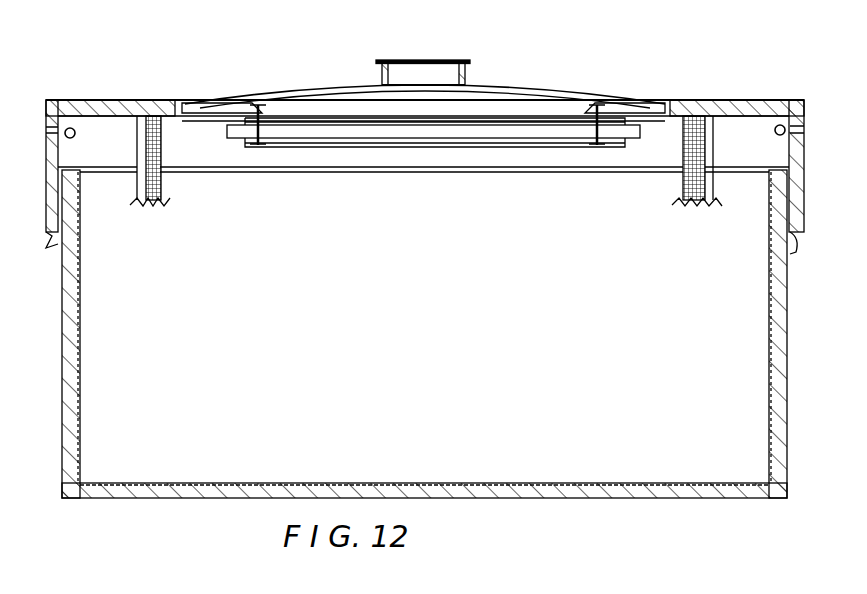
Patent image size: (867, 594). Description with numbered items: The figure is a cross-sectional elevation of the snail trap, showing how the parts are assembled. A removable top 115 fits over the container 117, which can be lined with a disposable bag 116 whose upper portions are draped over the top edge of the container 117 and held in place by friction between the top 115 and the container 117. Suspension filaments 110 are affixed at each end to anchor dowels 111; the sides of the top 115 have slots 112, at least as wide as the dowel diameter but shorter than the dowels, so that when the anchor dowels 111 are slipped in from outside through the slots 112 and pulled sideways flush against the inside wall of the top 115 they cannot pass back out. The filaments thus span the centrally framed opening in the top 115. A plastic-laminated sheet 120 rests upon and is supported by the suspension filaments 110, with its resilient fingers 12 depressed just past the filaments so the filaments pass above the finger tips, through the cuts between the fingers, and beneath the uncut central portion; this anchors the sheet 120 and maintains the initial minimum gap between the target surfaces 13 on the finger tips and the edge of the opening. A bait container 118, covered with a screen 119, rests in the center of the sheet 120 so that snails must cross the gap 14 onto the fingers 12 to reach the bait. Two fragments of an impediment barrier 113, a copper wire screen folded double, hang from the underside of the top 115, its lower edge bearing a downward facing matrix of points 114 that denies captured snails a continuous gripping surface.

The fingers 12 is at (245, 100).
The target surfaces 13 is at (200, 100).
The gap 14 is at (178, 100).
The suspension filaments 110 is at (365, 102).
The anchor dowels 111 is at (75, 138).
The slots 112 is at (58, 122).
The impediment barrier 113 is at (713, 135).
The matrix of points 114 is at (150, 206).
The top 115 is at (54, 236).
The disposable bag 116 is at (80, 290).
The container 117 is at (90, 498).
The bait container 118 is at (463, 70).
The screen 119 is at (412, 60).
The laminated sheet 120 is at (500, 88).